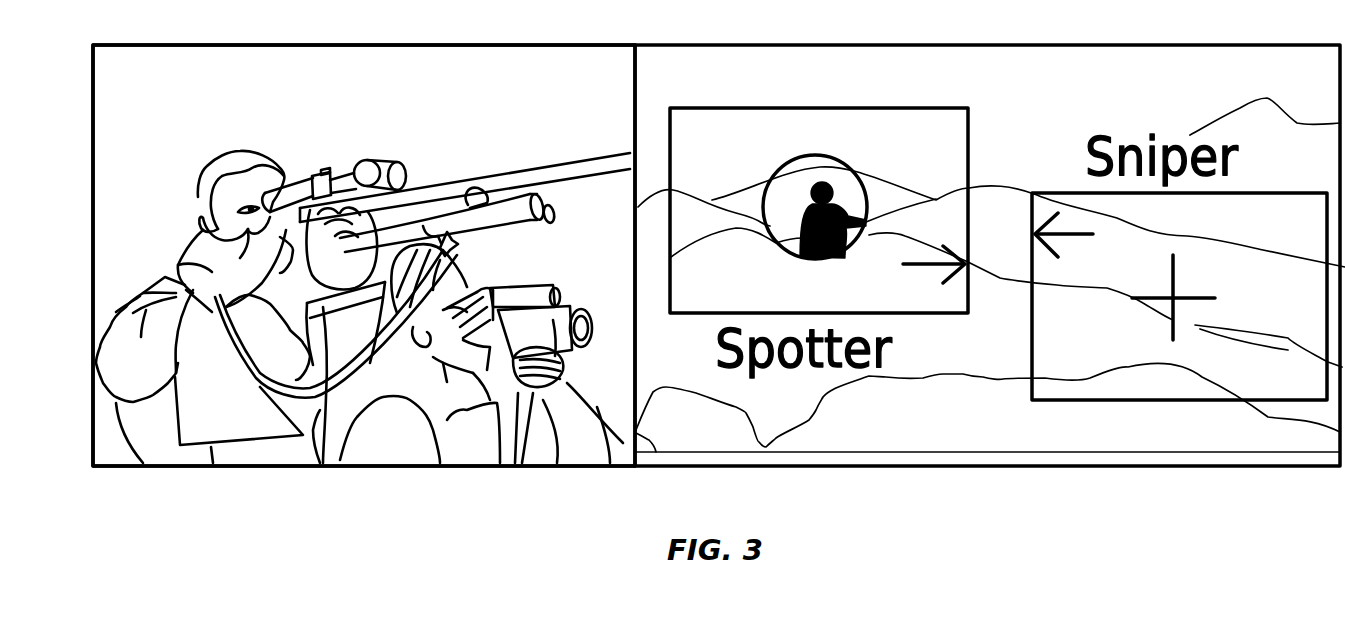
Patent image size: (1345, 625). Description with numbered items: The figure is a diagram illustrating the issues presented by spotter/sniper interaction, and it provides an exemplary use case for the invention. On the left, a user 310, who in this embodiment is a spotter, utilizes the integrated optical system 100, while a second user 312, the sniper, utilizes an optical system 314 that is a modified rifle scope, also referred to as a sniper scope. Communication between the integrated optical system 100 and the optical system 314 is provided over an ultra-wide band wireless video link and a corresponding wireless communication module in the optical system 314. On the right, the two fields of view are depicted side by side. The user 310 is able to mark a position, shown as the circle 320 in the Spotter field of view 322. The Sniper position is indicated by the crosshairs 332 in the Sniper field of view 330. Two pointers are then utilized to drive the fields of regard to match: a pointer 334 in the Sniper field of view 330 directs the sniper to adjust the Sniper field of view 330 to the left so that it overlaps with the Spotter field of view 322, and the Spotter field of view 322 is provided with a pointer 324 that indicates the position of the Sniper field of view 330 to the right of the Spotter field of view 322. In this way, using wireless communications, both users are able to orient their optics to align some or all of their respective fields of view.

The integrated optical system 100 is at (533, 287).
The user 310 is at (477, 505).
The second user 312 is at (242, 505).
The optical system 314 is at (397, 166).
The circle 320 is at (817, 156).
The Spotter field of view 322 is at (764, 108).
The pointer 324 is at (930, 272).
The Sniper field of view 330 is at (1242, 193).
The crosshairs 332 is at (1181, 286).
The pointer 334 is at (1071, 240).